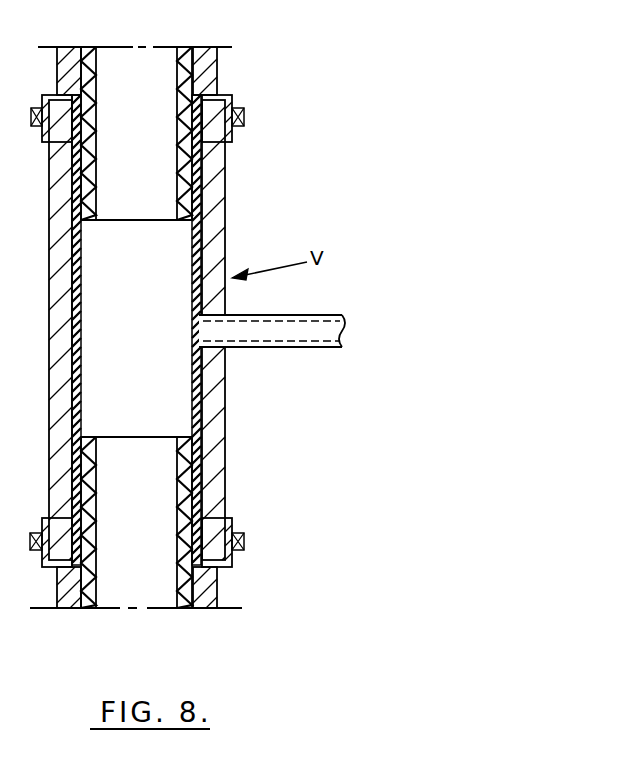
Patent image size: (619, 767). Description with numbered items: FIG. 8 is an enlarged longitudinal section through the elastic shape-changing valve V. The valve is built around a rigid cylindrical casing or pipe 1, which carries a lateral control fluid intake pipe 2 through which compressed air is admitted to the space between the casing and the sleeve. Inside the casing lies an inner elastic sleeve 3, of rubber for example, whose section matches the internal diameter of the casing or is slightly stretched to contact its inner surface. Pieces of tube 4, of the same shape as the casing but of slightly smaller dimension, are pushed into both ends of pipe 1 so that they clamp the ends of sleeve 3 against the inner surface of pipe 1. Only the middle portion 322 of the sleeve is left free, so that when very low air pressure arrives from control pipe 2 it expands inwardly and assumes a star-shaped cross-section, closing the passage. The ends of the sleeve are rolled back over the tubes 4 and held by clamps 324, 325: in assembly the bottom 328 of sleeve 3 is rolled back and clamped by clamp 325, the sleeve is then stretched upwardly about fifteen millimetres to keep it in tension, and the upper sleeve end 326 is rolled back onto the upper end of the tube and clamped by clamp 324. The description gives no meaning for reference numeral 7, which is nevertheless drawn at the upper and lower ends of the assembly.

The rigid casing 1 is at (212, 397).
The control fluid intake pipe 2 is at (293, 315).
The inner elastic sleeve 3 is at (197, 257).
The tube 4 is at (88, 112).
The coupling collar 7 is at (205, 72).
The middle portion 322 is at (195, 324).
The clamp 324 is at (246, 120).
The clamp 325 is at (245, 543).
The upper sleeve end 326 is at (232, 98).
The bottom of sleeve 328 is at (223, 520).